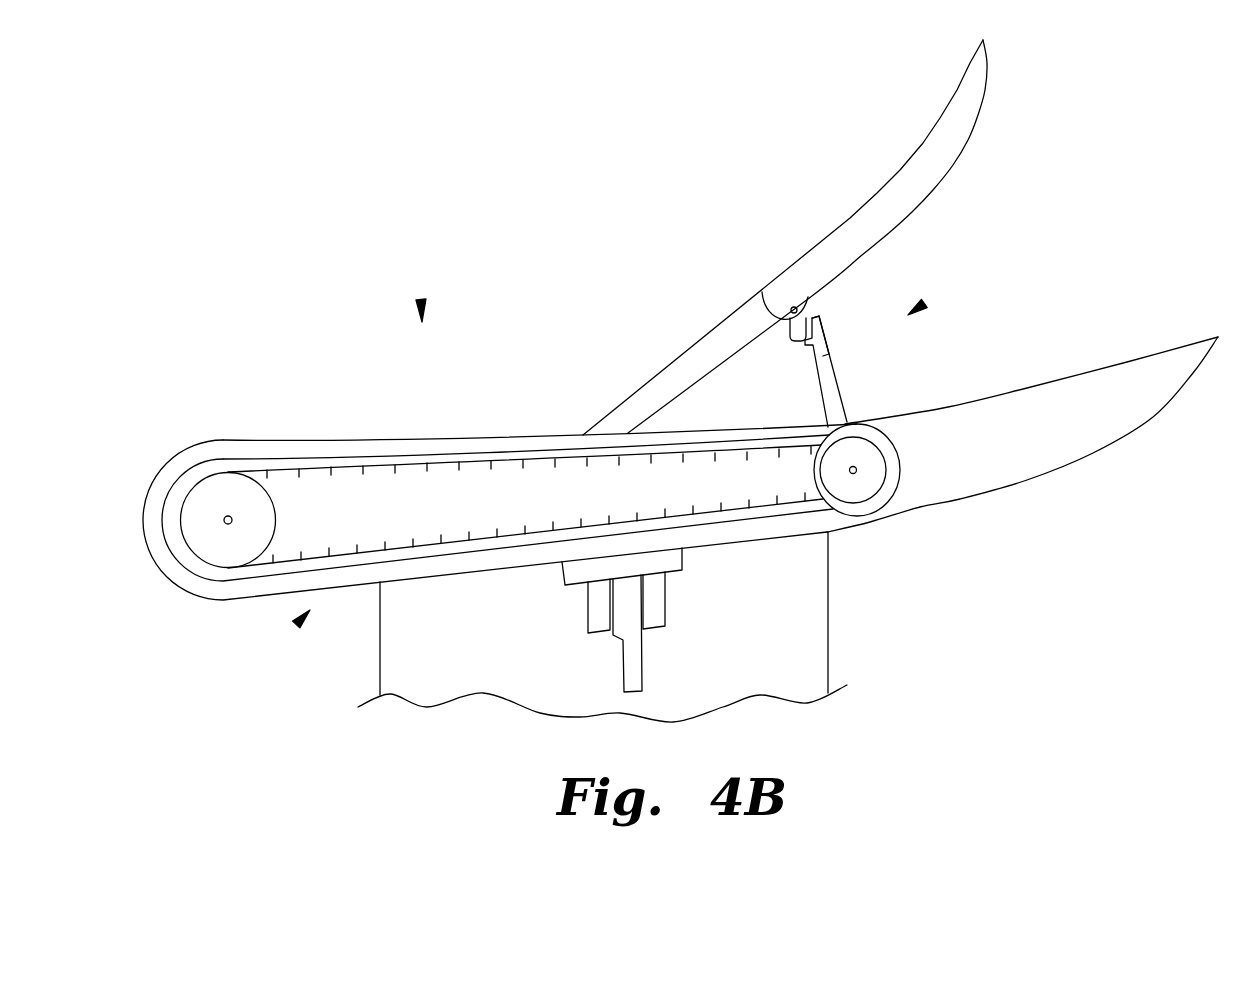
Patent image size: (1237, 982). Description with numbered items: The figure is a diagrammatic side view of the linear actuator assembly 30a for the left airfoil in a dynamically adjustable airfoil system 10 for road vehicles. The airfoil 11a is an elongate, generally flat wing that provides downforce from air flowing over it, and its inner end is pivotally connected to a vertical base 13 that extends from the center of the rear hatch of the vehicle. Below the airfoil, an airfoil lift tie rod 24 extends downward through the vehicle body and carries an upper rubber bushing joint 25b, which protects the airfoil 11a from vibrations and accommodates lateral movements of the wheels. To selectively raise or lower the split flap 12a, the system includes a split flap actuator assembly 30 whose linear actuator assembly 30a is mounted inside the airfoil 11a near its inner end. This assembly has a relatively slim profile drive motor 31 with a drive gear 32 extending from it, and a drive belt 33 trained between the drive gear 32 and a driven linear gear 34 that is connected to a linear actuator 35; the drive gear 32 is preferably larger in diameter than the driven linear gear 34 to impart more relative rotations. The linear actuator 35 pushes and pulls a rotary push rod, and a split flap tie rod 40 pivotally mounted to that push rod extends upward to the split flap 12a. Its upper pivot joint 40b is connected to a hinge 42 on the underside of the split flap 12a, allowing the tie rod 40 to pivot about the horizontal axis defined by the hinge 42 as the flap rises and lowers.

The dynamically adjustable airfoil system 10 is at (422, 310).
The airfoil 11a is at (987, 490).
The split flap 12a is at (908, 160).
The vertical base 13 is at (828, 635).
The airfoil lift tie rod 24 is at (643, 668).
The upper rubber bushing joint 25b is at (645, 605).
The split flap actuator assembly 30 is at (908, 315).
The linear actuator assembly 30a is at (310, 610).
The drive motor 31 is at (215, 457).
The drive gear 32 is at (218, 553).
The drive belt 33 is at (773, 510).
The driven linear gear 34 is at (878, 483).
The linear actuator 35 is at (880, 430).
The split flap tie rod 40 is at (897, 321).
The upper pivot joint 40b is at (827, 307).
The hinge 42 is at (762, 292).